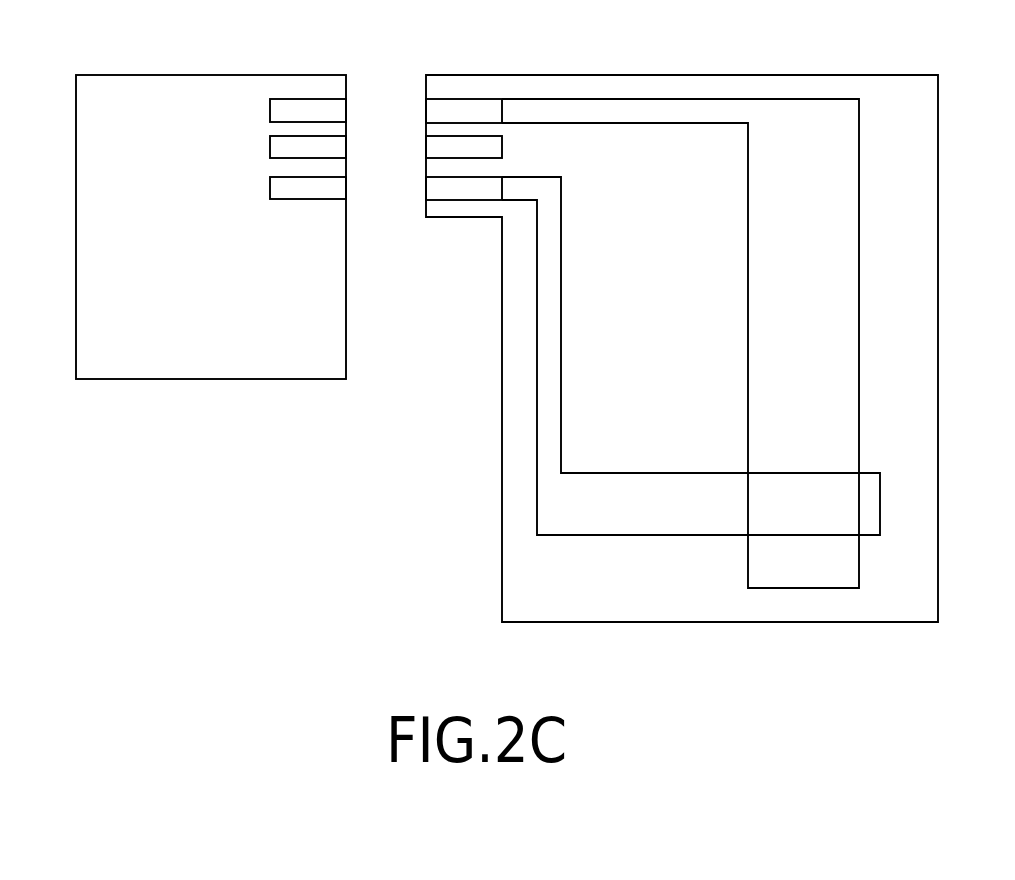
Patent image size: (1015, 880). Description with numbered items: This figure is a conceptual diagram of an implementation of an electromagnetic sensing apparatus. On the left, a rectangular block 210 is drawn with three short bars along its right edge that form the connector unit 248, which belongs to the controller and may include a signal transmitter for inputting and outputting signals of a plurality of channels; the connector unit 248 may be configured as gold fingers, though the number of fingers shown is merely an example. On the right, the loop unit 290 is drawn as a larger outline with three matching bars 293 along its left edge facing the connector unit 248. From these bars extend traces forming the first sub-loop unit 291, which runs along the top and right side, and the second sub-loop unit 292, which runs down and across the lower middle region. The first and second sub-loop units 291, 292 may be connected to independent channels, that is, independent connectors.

The first substrate 210 is at (213, 74).
The connector unit 248 is at (270, 200).
The loop unit 290 is at (941, 73).
The first sub-loop unit 291 is at (861, 238).
The second sub-loop unit 292 is at (661, 471).
The contact pads 293 is at (465, 98).